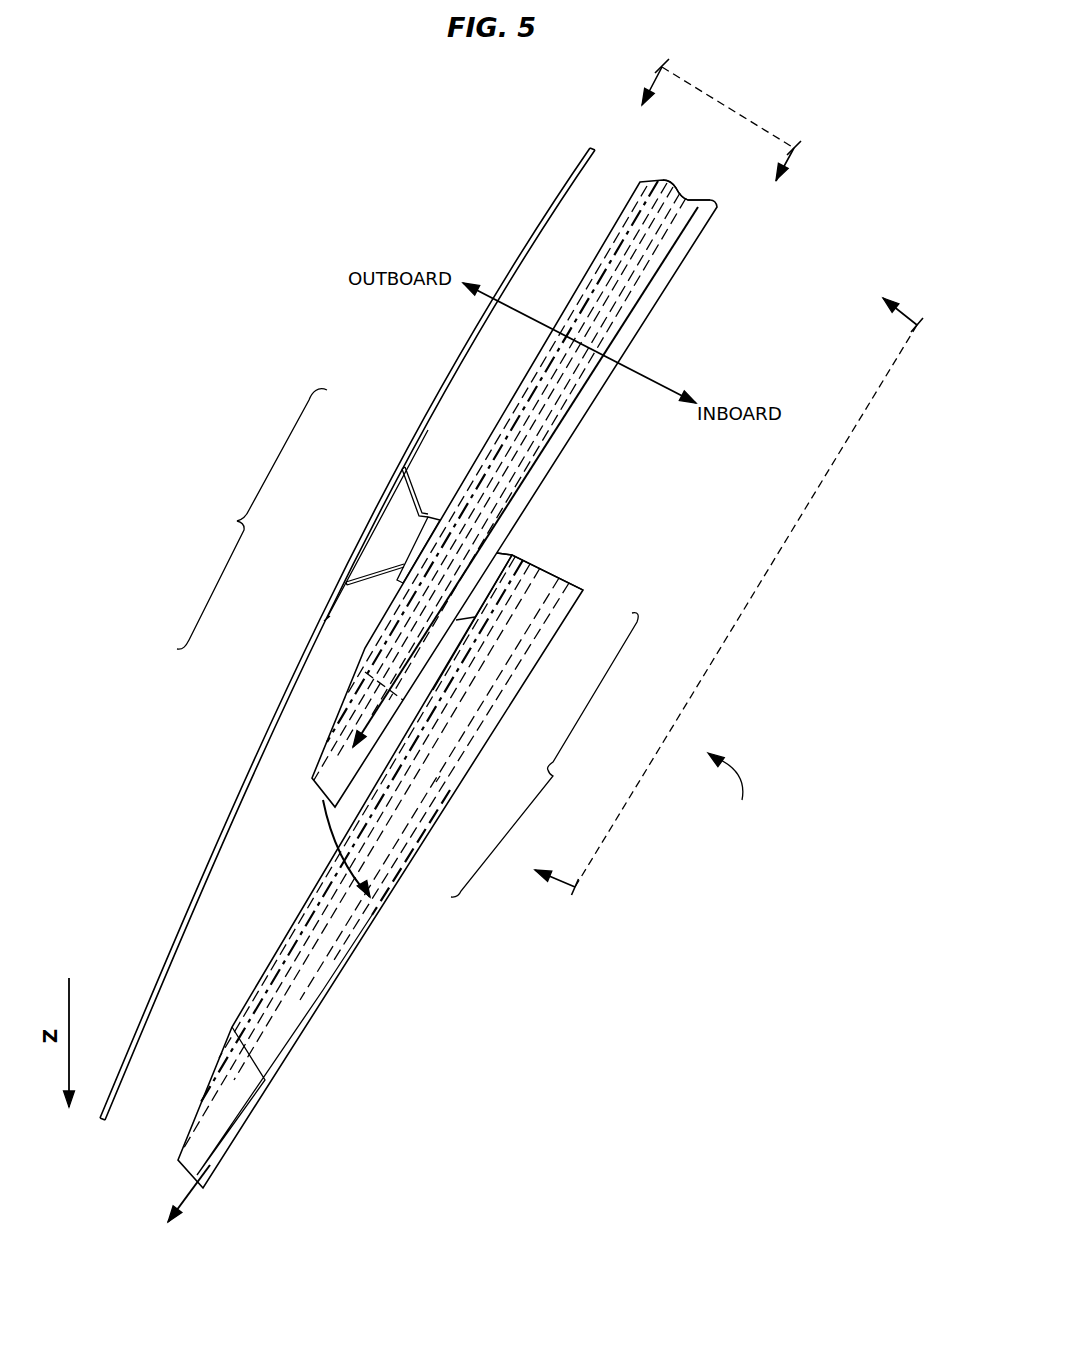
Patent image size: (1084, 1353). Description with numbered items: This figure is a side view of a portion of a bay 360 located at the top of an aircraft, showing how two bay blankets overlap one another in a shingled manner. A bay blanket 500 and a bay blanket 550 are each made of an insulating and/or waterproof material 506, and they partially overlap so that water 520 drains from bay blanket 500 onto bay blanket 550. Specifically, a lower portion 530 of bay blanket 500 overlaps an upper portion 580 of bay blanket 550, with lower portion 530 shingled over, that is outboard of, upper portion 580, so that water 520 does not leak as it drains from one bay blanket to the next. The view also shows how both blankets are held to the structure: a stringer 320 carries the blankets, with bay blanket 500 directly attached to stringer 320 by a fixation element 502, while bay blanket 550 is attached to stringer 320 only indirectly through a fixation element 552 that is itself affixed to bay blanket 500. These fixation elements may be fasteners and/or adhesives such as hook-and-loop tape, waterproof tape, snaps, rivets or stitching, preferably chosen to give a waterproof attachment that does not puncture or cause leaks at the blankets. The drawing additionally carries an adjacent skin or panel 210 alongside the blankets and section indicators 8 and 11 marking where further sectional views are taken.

The section line 8- 8 is at (726, 115).
The section line 11- 11 is at (749, 607).
The skin 210 is at (458, 353).
The stringer 320 is at (375, 565).
The bay 360 is at (733, 792).
The bay blanket 500 is at (561, 452).
The fixation element 502 is at (434, 515).
The insulating and/or waterproof material 506 is at (679, 200).
The water 520 is at (645, 292).
The lower portion of bay blanket 530 is at (252, 519).
The bay blanket 550 is at (289, 1055).
The fixation element 552 is at (513, 553).
The upper portion of bay blanket 580 is at (544, 755).